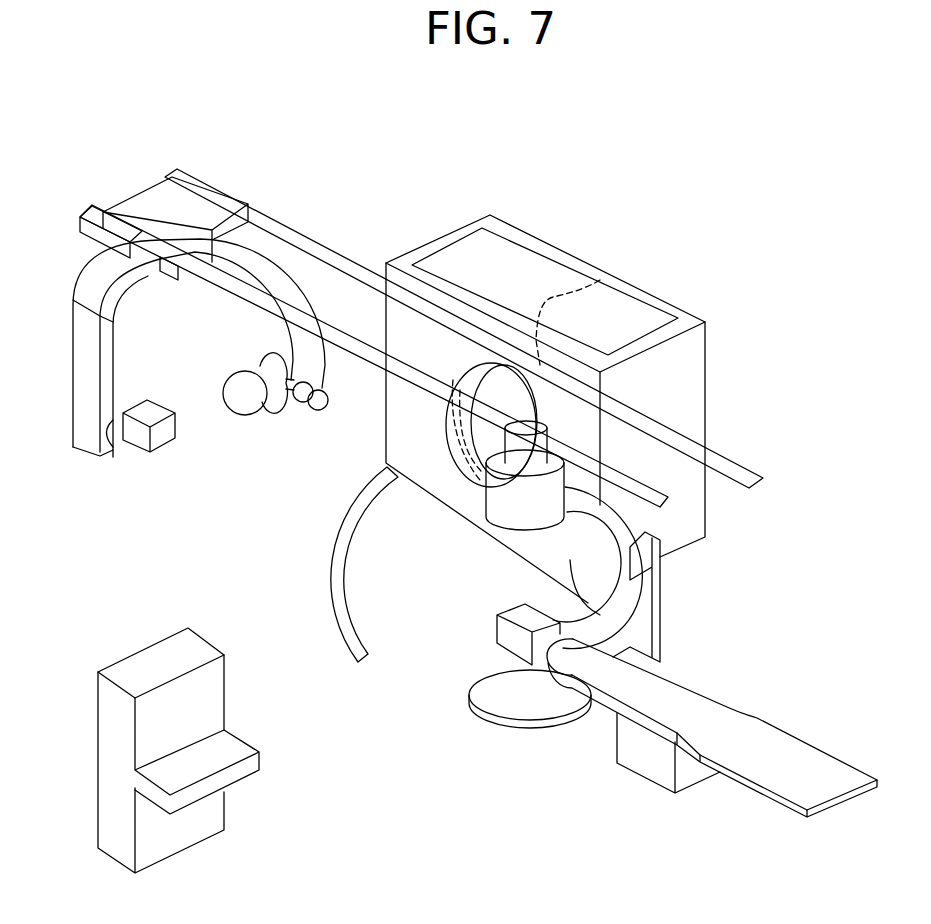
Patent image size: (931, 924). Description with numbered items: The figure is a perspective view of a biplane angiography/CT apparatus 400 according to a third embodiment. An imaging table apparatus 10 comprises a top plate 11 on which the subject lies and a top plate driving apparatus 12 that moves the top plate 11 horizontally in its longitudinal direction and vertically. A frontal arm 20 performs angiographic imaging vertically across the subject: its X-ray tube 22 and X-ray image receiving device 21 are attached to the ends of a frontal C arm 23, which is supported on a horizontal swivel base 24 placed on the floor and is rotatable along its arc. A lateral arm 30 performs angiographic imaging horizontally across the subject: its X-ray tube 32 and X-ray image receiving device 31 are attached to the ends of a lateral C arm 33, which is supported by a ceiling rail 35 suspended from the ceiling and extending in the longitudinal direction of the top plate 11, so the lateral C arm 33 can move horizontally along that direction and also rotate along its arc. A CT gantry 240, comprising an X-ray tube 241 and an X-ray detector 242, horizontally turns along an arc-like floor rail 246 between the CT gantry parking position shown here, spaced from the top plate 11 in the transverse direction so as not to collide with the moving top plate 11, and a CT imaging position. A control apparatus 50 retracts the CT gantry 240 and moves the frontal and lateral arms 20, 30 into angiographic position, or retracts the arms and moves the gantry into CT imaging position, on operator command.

The biplane angiography/CT apparatus 400 is at (825, 86).
The CT gantry 240 is at (658, 191).
The X-ray tube 241 is at (600, 280).
The X-ray detector 242 is at (453, 380).
The floor rail 246 is at (336, 580).
The ceiling rail 35 is at (225, 291).
The lateral arm 30 is at (26, 464).
The lateral C arm 33 is at (132, 278).
The X-ray tube 32 is at (160, 440).
The X-ray image receiving device 31 is at (247, 400).
The frontal arm 20 is at (438, 790).
The X-ray image receiving device 21 is at (512, 510).
The X-ray tube 22 is at (505, 637).
The frontal C arm 23 is at (585, 603).
The horizontal swivel base 24 is at (513, 708).
The imaging table apparatus 10 is at (713, 826).
The top plate 11 is at (725, 747).
The top plate driving apparatus 12 is at (653, 765).
The control apparatus 50 is at (233, 775).